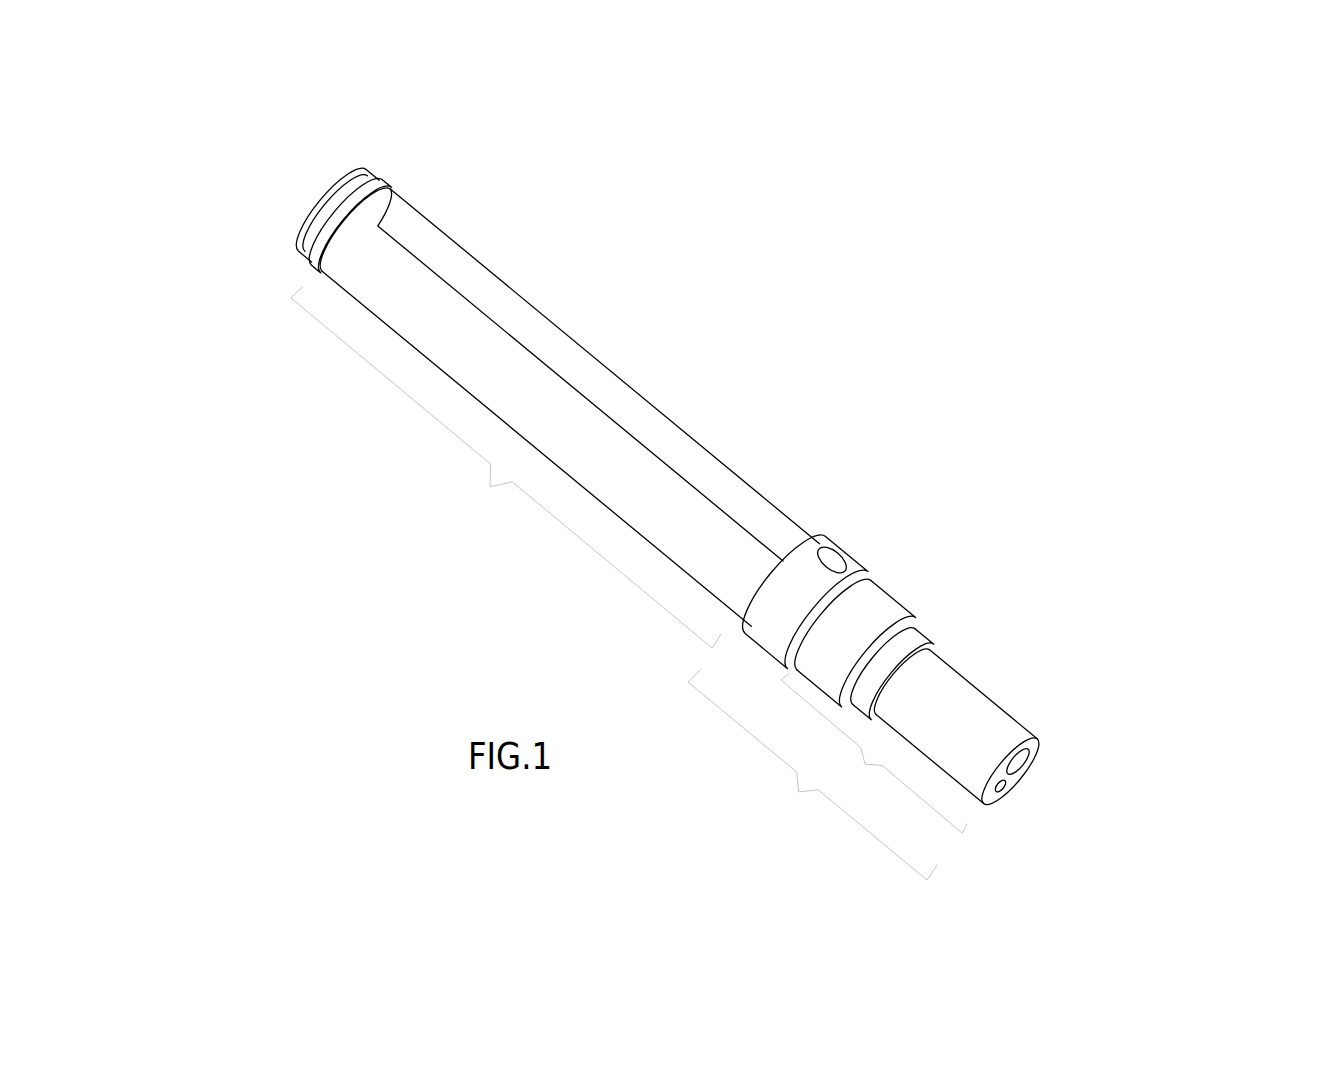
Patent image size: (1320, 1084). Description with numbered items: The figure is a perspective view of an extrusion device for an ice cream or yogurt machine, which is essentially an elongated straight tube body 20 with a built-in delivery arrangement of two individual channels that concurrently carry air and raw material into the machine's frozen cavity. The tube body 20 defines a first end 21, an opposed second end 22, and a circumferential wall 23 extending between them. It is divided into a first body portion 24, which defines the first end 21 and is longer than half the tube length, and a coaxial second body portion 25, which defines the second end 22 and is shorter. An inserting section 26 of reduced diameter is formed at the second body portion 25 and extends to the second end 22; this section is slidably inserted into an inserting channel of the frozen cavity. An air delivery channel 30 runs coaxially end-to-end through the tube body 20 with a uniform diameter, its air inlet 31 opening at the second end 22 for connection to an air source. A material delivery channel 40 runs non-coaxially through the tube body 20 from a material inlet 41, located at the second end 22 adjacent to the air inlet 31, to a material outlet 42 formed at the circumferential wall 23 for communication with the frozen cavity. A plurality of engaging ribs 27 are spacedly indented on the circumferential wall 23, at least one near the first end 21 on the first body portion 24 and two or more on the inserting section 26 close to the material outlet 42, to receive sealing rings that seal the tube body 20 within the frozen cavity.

The tube body 20 is at (701, 502).
The first end 21 is at (318, 168).
The second end 22 is at (1050, 782).
The circumferential wall 23 is at (668, 398).
The first body portion 24 is at (506, 467).
The second body portion 25 is at (874, 753).
The inserting section 26 is at (812, 774).
The engaging ribs 27 is at (398, 168).
The air delivery channel 30 is at (1097, 862).
The air inlet 31 is at (1008, 793).
The material delivery channel 40 is at (1057, 771).
The material inlet 41 is at (1023, 755).
The material outlet 42 is at (842, 530).